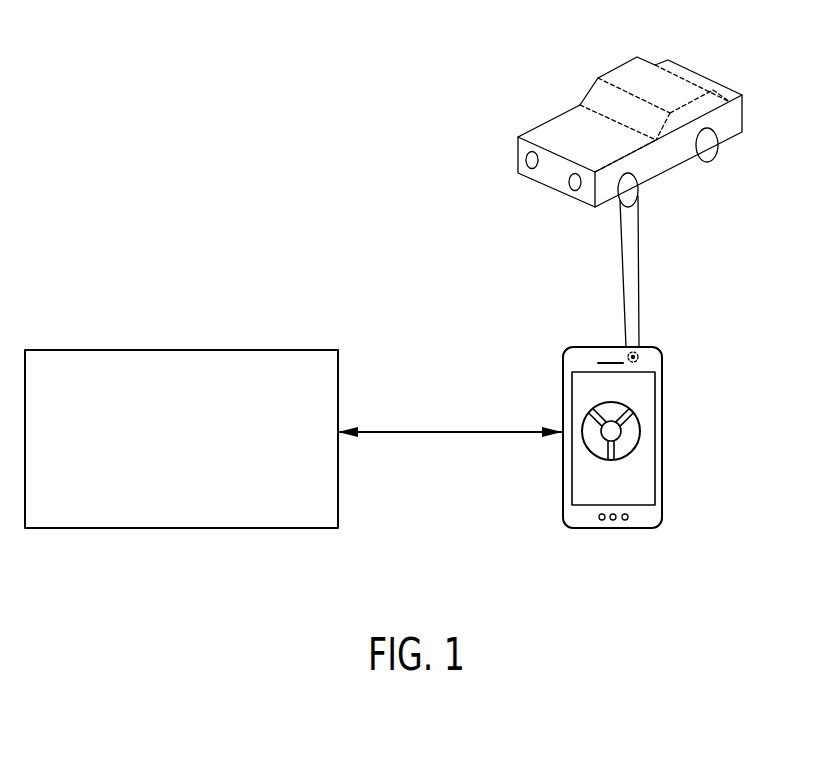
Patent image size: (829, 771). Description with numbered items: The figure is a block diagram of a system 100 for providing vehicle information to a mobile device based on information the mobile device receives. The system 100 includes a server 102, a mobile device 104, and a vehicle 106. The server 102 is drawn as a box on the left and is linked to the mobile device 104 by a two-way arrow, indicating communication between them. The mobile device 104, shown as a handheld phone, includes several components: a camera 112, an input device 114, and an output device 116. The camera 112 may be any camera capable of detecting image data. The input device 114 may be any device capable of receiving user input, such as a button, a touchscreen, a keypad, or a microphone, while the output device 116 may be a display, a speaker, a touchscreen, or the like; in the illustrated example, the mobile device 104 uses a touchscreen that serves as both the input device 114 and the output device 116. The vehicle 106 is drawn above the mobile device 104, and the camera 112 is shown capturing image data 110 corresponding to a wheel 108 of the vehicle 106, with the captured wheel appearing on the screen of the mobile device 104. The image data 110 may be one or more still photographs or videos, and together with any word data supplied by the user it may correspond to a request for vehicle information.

The system 100 is at (98, 142).
The server 102 is at (208, 350).
The mobile device 104 is at (621, 428).
The vehicle 106 is at (620, 72).
The wheel 108 is at (633, 197).
The image data 110 is at (592, 412).
The camera 112 is at (645, 352).
The input device 114 is at (643, 485).
The output device 116 is at (580, 485).